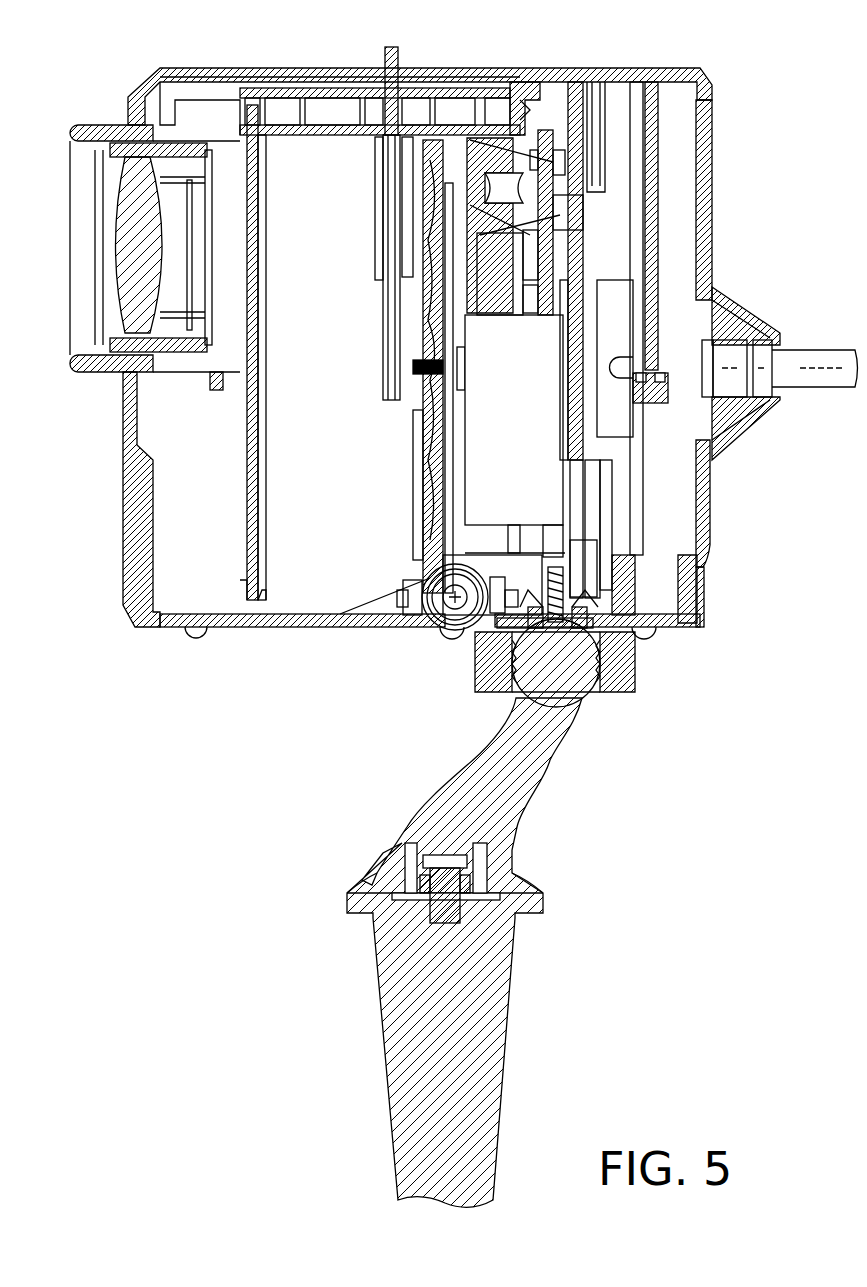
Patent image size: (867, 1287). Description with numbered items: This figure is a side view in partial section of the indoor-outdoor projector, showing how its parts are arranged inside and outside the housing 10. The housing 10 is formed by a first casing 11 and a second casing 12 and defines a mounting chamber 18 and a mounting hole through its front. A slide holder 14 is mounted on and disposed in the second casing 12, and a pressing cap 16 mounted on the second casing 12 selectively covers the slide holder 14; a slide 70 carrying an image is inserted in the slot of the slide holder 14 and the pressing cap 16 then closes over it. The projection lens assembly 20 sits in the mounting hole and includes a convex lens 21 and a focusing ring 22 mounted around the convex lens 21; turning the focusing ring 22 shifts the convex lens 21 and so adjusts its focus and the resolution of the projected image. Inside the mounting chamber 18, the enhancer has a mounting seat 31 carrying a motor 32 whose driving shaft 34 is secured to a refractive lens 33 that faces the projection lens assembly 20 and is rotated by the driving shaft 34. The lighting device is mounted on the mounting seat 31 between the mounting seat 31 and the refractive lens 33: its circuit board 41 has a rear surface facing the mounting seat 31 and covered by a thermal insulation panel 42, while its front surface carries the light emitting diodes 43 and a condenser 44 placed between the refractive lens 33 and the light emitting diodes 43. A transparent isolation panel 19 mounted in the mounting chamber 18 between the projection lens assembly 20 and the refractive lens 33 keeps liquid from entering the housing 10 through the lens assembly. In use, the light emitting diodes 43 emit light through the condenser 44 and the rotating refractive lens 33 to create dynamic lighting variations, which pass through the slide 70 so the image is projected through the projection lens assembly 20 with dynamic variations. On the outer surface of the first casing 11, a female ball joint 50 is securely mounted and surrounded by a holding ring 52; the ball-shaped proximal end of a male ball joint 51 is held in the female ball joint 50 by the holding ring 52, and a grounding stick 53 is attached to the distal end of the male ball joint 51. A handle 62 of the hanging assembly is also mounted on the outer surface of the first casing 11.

The housing 10 is at (738, 236).
The first casing 11 is at (700, 495).
The second casing 12 is at (700, 178).
The slide holder 14 is at (326, 85).
The pressing cap 16 is at (514, 80).
The mounting chamber 18 is at (388, 509).
The transparent isolation panel 19 is at (250, 480).
The projection lens assembly 20 is at (102, 98).
The convex lens 21 is at (130, 195).
The focusing ring 22 is at (94, 128).
The mounting seat 31 is at (577, 85).
The motor 32 is at (490, 495).
The refractive lens 33 is at (433, 440).
The driving shaft 34 is at (422, 376).
The circuit board 41 is at (497, 212).
The thermal insulation panel 42 is at (552, 162).
The light emitting diodes 43 is at (522, 190).
The condenser 44 is at (505, 233).
The female ball joint 50 is at (598, 642).
The male ball joint 51 is at (570, 680).
The holding ring 52 is at (625, 678).
The grounding stick 53 is at (483, 1032).
The handle 62 is at (705, 592).
The slide 70 is at (388, 212).